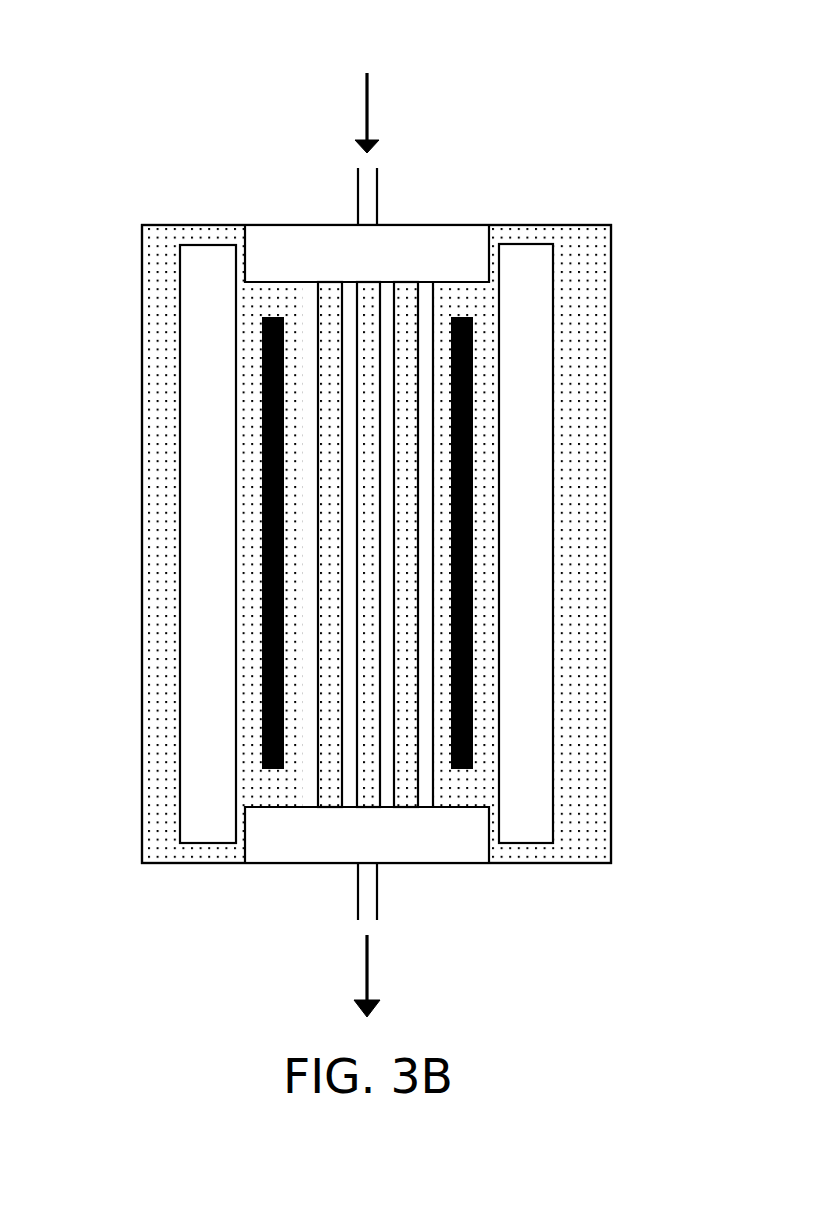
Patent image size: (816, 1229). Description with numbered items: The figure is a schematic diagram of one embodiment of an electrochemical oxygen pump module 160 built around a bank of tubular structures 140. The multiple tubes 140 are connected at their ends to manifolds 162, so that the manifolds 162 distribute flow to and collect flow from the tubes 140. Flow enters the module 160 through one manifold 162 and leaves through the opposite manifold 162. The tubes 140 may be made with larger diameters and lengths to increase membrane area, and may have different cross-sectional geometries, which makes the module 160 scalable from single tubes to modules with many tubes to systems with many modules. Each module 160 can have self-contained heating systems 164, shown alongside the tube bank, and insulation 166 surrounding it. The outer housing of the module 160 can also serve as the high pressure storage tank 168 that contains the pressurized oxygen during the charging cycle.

The electrochemical oxygen pump module 160 is at (174, 48).
The manifolds 162 is at (273, 236).
The tubular structures 140 is at (307, 288).
The heating systems 164 is at (464, 460).
The insulation 166 is at (533, 383).
The high pressure storage tank 168 is at (155, 813).